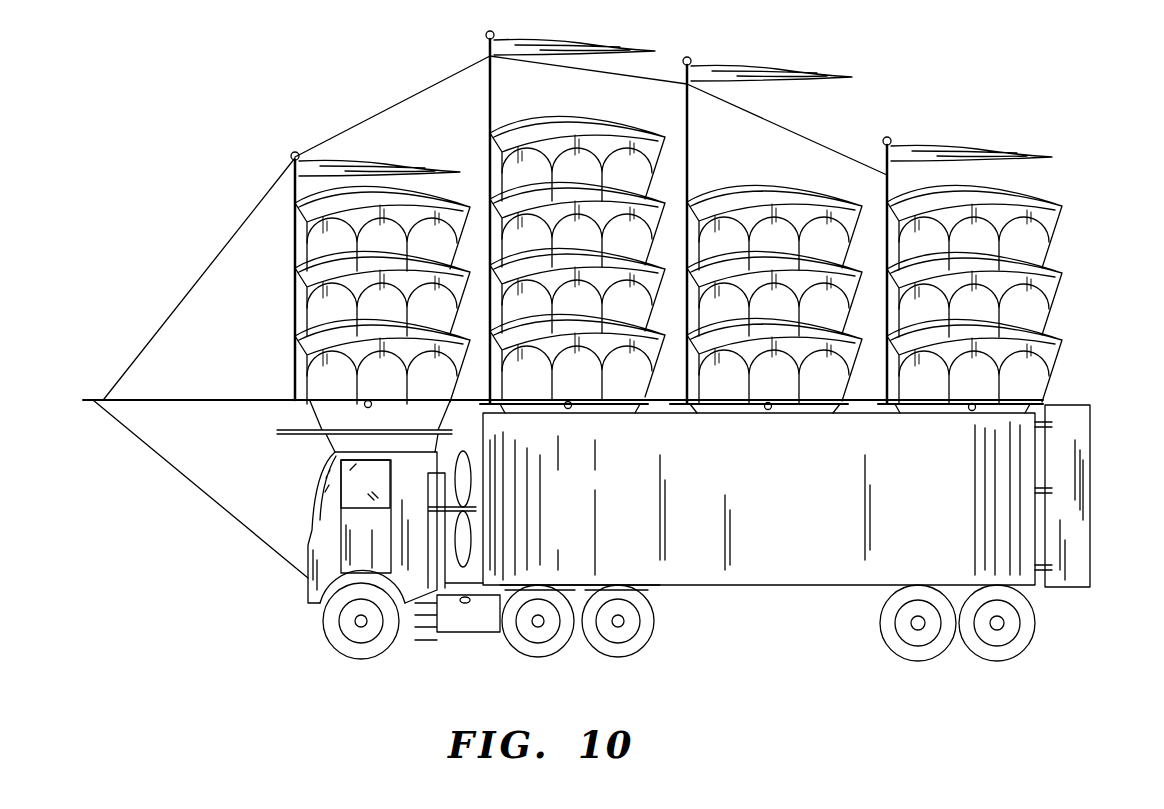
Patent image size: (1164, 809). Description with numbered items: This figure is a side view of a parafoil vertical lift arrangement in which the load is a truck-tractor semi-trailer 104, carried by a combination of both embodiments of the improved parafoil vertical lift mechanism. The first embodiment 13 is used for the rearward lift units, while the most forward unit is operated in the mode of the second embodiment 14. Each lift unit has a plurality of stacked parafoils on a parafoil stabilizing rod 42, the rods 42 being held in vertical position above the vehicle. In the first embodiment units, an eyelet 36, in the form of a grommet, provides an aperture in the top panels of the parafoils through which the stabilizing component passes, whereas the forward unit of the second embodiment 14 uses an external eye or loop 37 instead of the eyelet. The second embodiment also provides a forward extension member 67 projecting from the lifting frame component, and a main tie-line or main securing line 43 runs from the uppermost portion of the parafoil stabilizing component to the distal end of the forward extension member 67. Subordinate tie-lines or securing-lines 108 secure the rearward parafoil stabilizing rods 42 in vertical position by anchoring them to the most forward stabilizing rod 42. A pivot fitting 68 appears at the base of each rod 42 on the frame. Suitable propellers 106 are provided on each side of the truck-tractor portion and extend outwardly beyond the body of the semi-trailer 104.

The improved parafoil vertical lift mechanism 13 is at (778, 237).
The second embodiment of improved parafoil vertical lift 14 is at (161, 238).
The eyelet 36 is at (491, 133).
The external eye or loop 37 is at (295, 205).
The parafoil stabilizing rod 42 is at (490, 80).
The main tie-line or main securing line 43 is at (150, 340).
The forward extension member 67 is at (163, 399).
The mast pivot 68 is at (372, 405).
The truck-tractor semi-trailer 104 is at (306, 588).
The propeller 106 is at (472, 540).
The subordinate tie-line or securing-line 108 is at (428, 89).